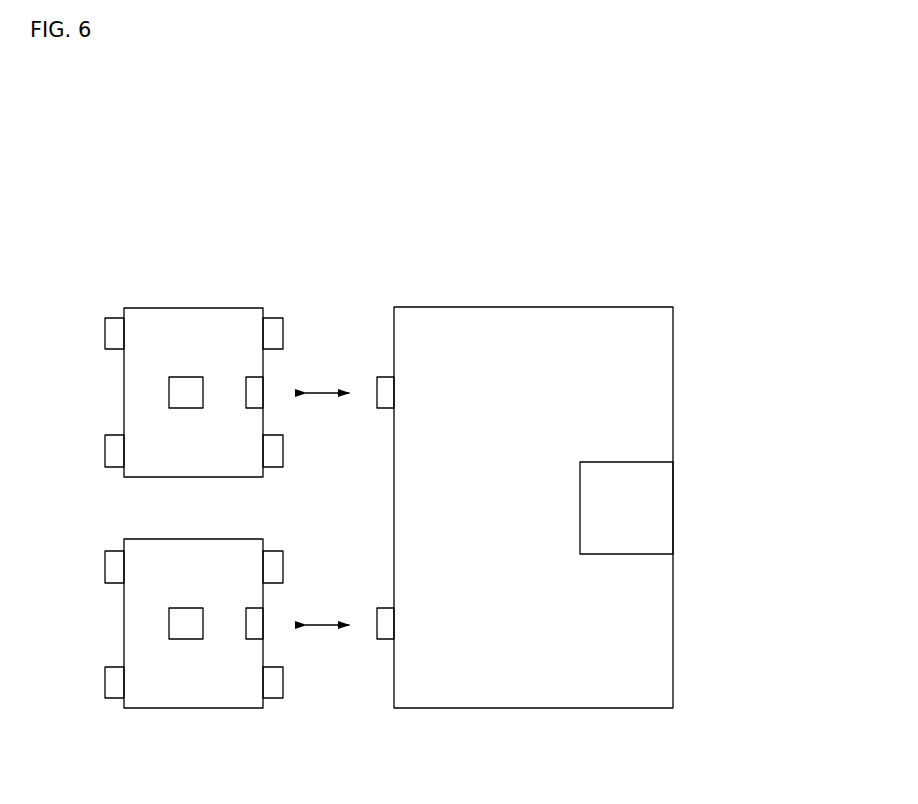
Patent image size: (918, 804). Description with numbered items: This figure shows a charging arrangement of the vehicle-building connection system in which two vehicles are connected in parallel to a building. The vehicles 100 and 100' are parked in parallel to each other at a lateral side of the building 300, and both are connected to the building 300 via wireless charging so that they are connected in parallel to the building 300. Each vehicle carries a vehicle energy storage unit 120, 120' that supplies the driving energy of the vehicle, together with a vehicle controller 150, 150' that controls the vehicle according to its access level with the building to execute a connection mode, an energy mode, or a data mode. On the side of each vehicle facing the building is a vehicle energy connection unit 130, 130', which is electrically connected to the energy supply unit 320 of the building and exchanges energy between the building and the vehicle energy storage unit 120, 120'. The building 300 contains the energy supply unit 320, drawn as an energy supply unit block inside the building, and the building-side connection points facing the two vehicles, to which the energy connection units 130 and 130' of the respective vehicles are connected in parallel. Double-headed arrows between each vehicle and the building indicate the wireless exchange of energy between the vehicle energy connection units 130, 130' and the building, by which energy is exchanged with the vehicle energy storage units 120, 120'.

The vehicle 100 is at (229, 348).
The second vehicle 100' is at (233, 668).
The vehicle energy storage unit 120 is at (179, 331).
The vehicle controller 150 is at (179, 331).
The vehicle energy storage unit of second vehicle 120' is at (176, 684).
The vehicle controller of second vehicle 150' is at (176, 684).
The vehicle energy connection unit 130 is at (300, 376).
The energy connection unit of second vehicle 130' is at (303, 640).
The building 300 is at (544, 465).
The energy supply unit 320 is at (673, 538).